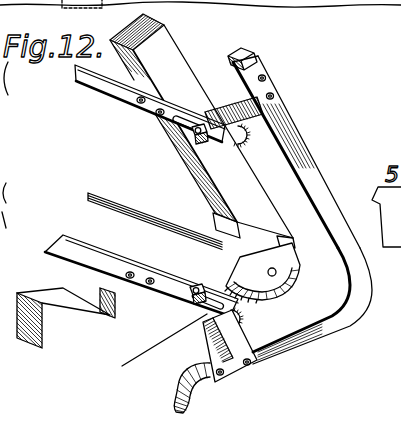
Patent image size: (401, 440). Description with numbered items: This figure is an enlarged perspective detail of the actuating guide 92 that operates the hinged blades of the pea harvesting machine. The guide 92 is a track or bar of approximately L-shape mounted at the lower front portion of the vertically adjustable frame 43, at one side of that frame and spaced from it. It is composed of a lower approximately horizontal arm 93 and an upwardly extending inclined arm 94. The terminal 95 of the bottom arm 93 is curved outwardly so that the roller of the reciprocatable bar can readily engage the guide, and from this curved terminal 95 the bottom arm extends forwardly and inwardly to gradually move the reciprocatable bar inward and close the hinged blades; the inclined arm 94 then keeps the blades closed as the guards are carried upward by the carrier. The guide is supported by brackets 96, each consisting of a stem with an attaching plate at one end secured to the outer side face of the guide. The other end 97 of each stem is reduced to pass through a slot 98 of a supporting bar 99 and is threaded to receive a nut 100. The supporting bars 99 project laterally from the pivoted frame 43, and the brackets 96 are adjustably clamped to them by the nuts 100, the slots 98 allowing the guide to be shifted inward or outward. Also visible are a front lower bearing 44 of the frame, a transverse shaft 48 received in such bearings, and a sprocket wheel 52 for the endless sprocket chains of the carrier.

The vertically adjustable frame 43 is at (112, 327).
The front lower bearing 44 is at (277, 273).
The transverse shaft 48 is at (145, 218).
The sprocket wheel 52 is at (277, 293).
The actuating guide 92 is at (366, 311).
The lower approximately horizontal arm 93 is at (297, 344).
The upwardly extending inclined arm 94 is at (315, 178).
The terminal 95 is at (175, 397).
The bracket 96 is at (243, 114).
The reduced end 97 is at (196, 134).
The slot 98 is at (181, 121).
The supporting bar 99 is at (110, 90).
The nut 100 is at (209, 145).